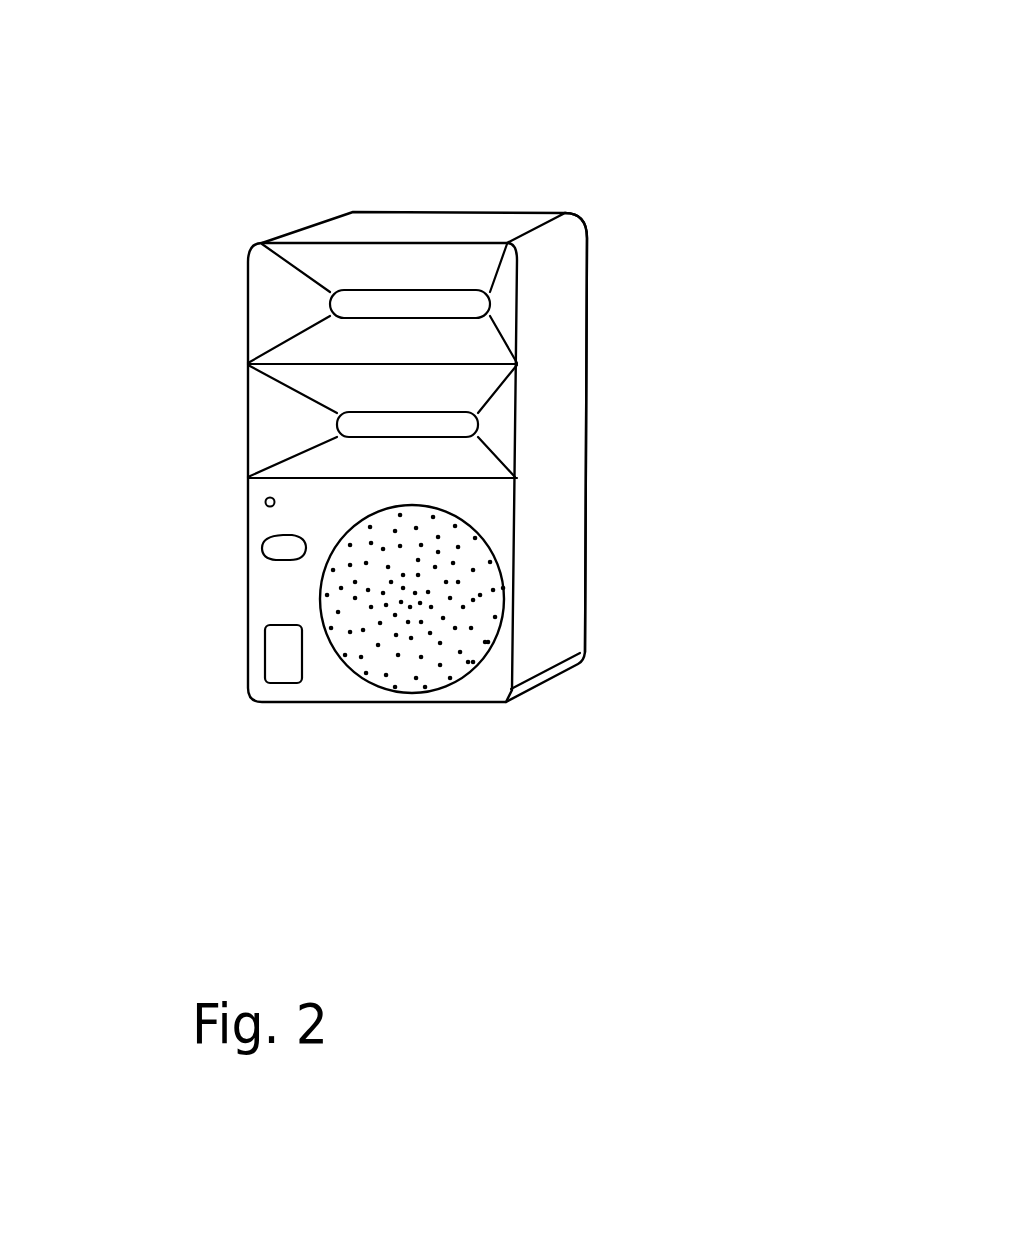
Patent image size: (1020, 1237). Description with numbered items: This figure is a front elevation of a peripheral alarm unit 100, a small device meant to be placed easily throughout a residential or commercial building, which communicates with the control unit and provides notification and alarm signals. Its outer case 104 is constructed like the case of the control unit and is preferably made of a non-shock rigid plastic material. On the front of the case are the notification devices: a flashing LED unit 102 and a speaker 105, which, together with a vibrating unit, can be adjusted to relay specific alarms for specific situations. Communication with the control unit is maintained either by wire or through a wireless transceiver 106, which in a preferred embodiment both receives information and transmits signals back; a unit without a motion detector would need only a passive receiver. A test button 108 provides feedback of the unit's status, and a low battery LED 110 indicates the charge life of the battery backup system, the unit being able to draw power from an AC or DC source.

The peripheral alarm unit 100 is at (563, 124).
The flashing LED unit 102 is at (505, 303).
The outer case 104 is at (566, 453).
The speaker 105 is at (405, 677).
The wireless transceiver 106 is at (288, 667).
The test button 108 is at (275, 568).
The low battery LED 110 is at (258, 490).